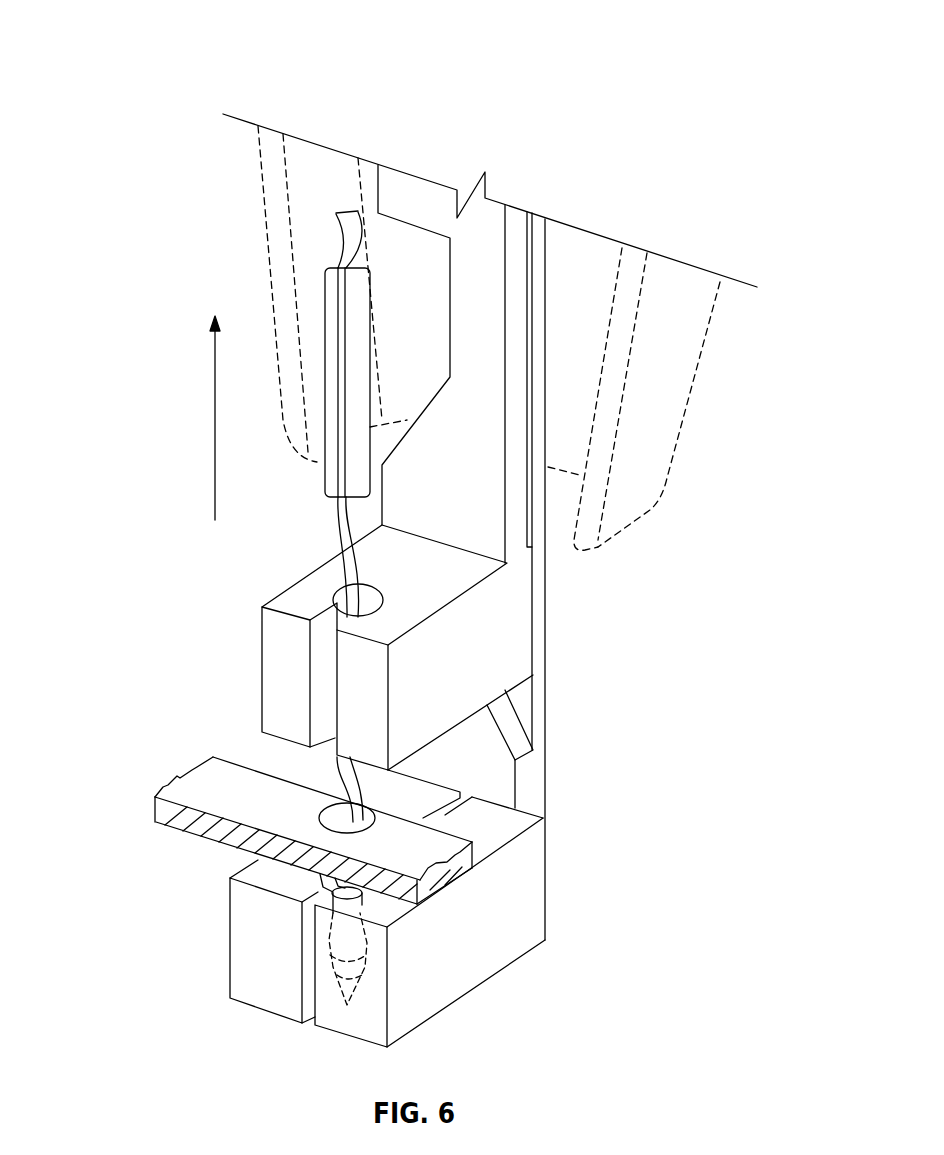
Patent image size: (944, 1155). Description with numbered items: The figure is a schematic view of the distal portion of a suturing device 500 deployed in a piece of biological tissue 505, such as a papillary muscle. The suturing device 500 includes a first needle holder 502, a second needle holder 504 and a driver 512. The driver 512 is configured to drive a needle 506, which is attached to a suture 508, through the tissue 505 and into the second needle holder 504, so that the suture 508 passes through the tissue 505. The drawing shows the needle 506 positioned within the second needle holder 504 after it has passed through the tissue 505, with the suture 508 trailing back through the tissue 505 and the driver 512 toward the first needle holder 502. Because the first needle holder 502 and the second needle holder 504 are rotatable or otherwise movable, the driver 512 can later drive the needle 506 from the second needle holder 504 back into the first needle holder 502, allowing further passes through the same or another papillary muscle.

The suturing device 500 is at (136, 74).
The first needle holder 502 is at (482, 660).
The second needle holder 504 is at (505, 938).
The tissue 505 is at (158, 822).
The needle 506 is at (368, 967).
The suture 508 is at (337, 535).
The driver 512 is at (353, 463).